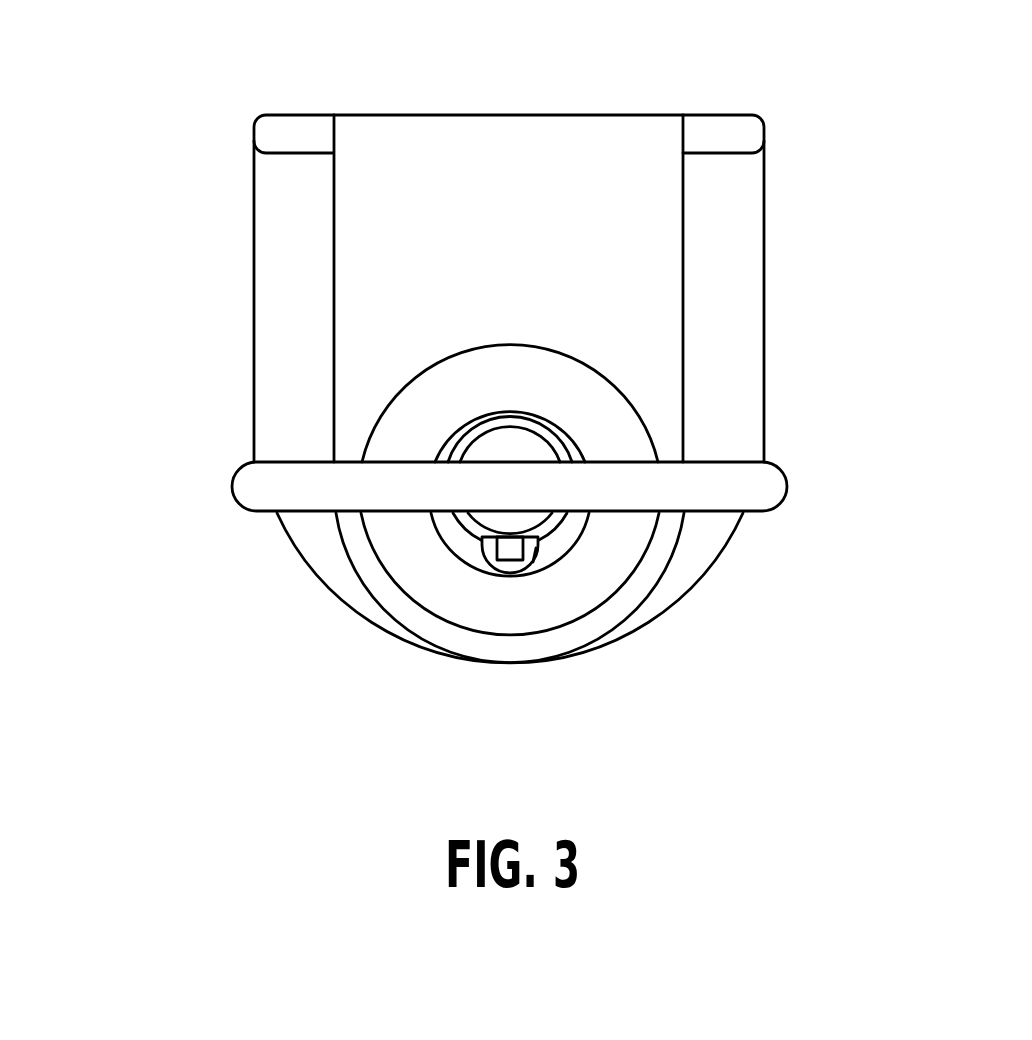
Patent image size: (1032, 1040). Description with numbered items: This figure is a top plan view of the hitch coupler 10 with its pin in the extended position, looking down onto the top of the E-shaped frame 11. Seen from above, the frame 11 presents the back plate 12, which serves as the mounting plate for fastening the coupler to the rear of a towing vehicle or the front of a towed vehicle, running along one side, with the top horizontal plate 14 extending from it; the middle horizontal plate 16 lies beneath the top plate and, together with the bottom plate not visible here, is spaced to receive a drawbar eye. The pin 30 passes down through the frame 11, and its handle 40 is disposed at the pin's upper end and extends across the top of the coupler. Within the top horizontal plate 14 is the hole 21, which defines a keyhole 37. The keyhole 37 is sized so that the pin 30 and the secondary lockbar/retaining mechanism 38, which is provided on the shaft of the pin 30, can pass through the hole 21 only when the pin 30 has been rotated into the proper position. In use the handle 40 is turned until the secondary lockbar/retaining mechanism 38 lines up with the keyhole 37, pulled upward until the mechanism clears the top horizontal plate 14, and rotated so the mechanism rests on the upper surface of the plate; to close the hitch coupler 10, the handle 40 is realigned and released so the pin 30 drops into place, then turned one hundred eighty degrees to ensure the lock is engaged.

The hitch coupler 10 is at (163, 424).
The frame 11 is at (292, 114).
The back plate 12 is at (717, 113).
The top horizontal plate 14 is at (655, 255).
The middle horizontal plate 16 is at (265, 267).
The hole 21 is at (482, 535).
The pin 30 is at (540, 450).
The keyhole 37 is at (533, 562).
The secondary lockbar/retaining mechanism 38 is at (505, 554).
The handle 40 is at (788, 482).